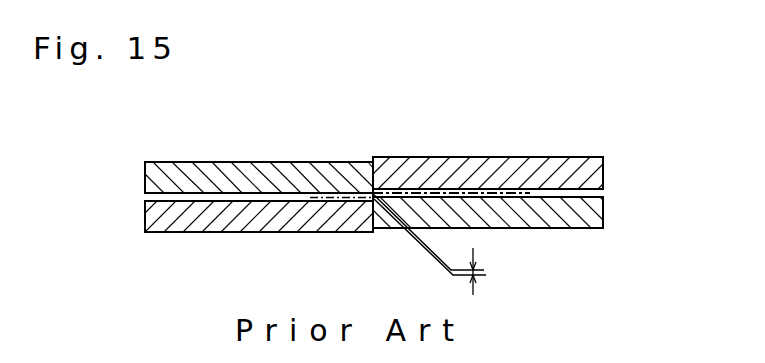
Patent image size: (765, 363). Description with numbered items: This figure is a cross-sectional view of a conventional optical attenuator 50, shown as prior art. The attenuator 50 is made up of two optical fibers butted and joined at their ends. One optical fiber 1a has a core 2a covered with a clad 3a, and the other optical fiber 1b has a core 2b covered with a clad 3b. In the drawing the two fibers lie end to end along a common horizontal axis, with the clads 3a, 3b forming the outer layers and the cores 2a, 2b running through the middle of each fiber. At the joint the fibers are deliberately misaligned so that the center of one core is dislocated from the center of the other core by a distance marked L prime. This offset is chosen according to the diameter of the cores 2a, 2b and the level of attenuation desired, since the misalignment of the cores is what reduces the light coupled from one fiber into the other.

The conventional optical attenuator 50 is at (373, 97).
The optical fiber 1a is at (637, 110).
The optical fiber 1b is at (98, 110).
The core 2a is at (533, 197).
The core 2b is at (210, 201).
The clad 3a is at (510, 158).
The clad 3b is at (208, 162).